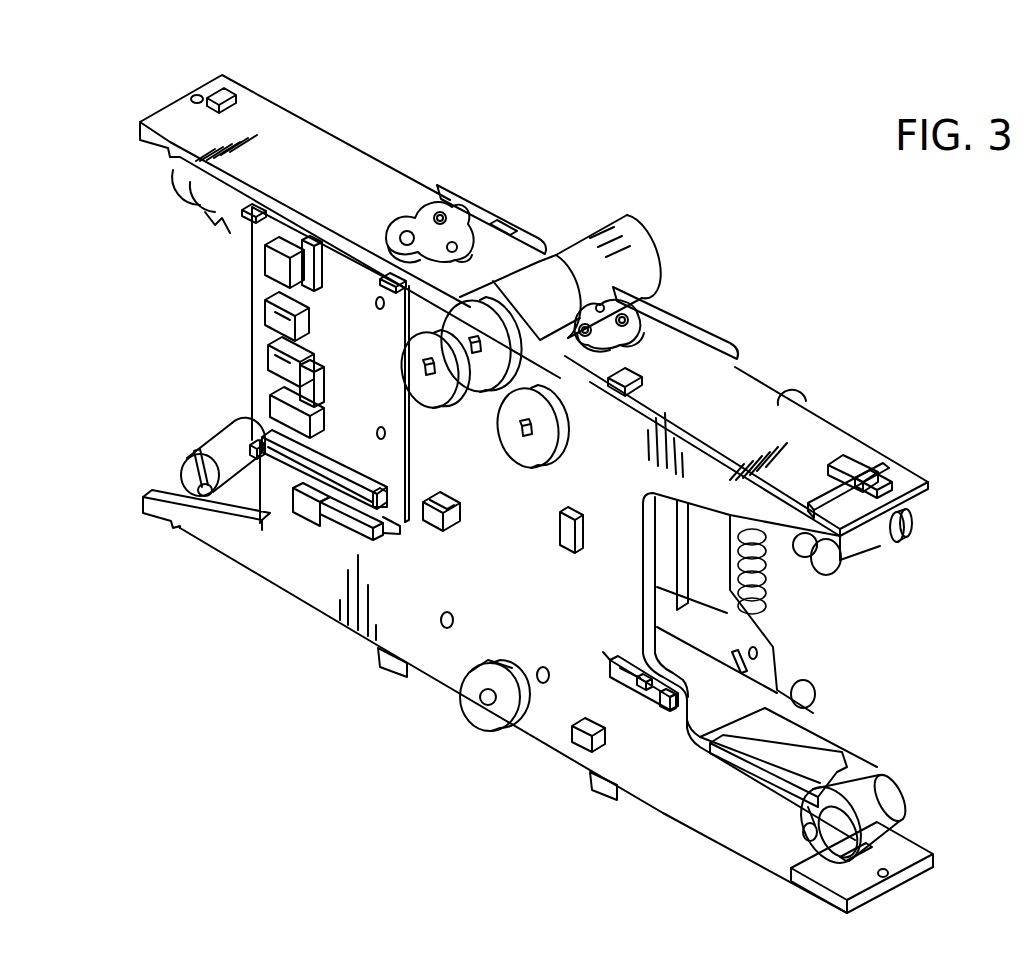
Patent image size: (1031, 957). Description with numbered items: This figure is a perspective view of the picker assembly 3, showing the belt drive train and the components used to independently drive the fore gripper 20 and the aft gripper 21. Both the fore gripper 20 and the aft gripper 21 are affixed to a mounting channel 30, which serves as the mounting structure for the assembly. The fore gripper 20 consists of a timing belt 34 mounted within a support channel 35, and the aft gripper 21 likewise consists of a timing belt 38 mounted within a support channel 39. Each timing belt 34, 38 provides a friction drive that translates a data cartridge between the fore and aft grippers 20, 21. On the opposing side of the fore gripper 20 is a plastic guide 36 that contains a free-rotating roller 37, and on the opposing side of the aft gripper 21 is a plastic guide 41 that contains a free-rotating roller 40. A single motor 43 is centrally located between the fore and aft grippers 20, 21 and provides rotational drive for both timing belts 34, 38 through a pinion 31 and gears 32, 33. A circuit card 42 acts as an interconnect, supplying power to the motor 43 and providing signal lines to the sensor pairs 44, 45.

The picker assembly 3 is at (878, 323).
The fore gripper 20 is at (936, 466).
The aft gripper 21 is at (172, 83).
The mounting channel 30 is at (840, 437).
The pinion 31 is at (497, 320).
The gear 32 is at (428, 367).
The gear 33 is at (532, 424).
The timing belt 34 is at (877, 545).
The support channel 35 is at (830, 573).
The plastic guide 36 is at (835, 743).
The free-rotating roller 37 is at (890, 818).
The timing belt 38 is at (177, 193).
The support channel 39 is at (210, 207).
The free-rotating roller 40 is at (233, 427).
The plastic guide 41 is at (178, 468).
The circuit card 42 is at (325, 245).
The motor 43 is at (643, 223).
The sensor pair 44 is at (670, 712).
The sensor pair 45 is at (330, 518).